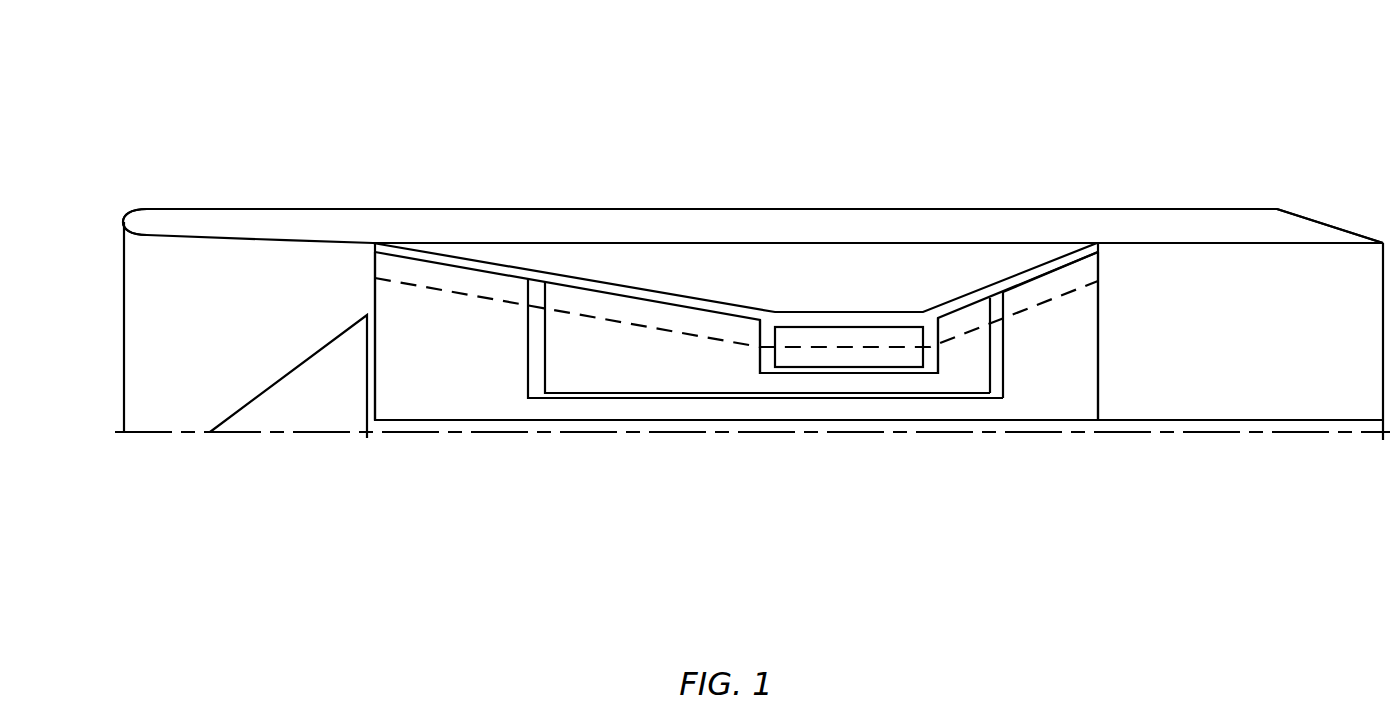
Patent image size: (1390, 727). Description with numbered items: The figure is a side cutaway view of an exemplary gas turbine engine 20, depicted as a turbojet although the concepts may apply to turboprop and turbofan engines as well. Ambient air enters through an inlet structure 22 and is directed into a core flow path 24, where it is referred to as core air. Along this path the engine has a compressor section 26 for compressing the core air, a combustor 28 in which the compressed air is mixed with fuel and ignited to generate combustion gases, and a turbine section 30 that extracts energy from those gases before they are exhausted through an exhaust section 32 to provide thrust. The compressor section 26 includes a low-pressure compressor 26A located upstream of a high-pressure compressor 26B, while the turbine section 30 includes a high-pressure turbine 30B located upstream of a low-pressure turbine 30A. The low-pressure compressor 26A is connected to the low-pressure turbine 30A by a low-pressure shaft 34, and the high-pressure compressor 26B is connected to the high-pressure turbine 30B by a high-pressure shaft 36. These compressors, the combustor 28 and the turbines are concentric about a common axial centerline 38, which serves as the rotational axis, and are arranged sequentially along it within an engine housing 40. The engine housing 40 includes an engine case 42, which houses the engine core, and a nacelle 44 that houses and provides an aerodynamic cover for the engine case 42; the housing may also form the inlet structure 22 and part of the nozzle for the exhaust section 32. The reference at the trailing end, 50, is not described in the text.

The gas turbine engine 20 is at (1238, 96).
The inlet structure 22 is at (115, 214).
The core flow path 24 is at (453, 292).
The compressor section 26 is at (375, 434).
The low-pressure compressor 26A is at (422, 377).
The high-pressure compressor 26B is at (597, 368).
The combustor 28 is at (844, 360).
The turbine section 30 is at (922, 434).
The low-pressure turbine 30A is at (1055, 375).
The high-pressure turbine 30B is at (965, 375).
The exhaust section 32 is at (1098, 434).
The low-pressure shaft 34 is at (883, 412).
The high-pressure shaft 36 is at (790, 383).
The axial centerline 38 is at (135, 433).
The engine housing 40 is at (1030, 190).
The engine case 42 is at (630, 243).
The nacelle 44 is at (792, 209).
The trailing edge 50 is at (1313, 205).